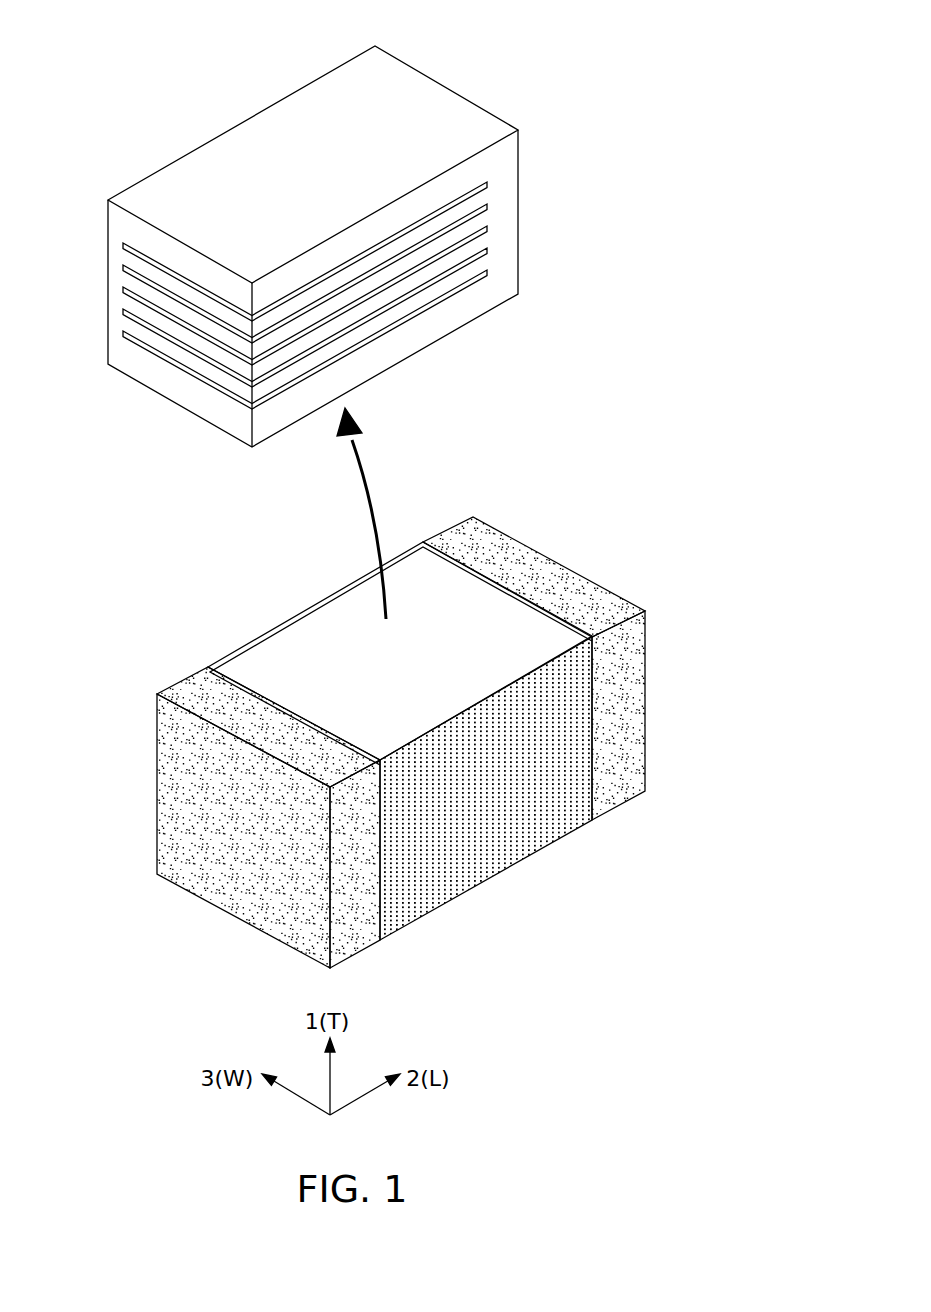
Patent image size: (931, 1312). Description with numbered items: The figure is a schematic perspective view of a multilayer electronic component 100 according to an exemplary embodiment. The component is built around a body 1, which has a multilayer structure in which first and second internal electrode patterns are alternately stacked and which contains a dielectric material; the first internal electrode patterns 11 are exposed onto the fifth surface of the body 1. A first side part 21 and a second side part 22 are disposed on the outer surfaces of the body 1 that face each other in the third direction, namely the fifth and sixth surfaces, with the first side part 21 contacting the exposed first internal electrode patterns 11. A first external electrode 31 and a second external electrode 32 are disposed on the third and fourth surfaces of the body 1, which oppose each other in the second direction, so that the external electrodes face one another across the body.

The multilayer electronic component 100 is at (263, 576).
The body 1 is at (319, 321).
The first internal electrode patterns 11 is at (123, 257).
The first side part 21 is at (474, 851).
The second side part 22 is at (326, 608).
The first external electrode 31 is at (192, 671).
The second external electrode 32 is at (448, 529).